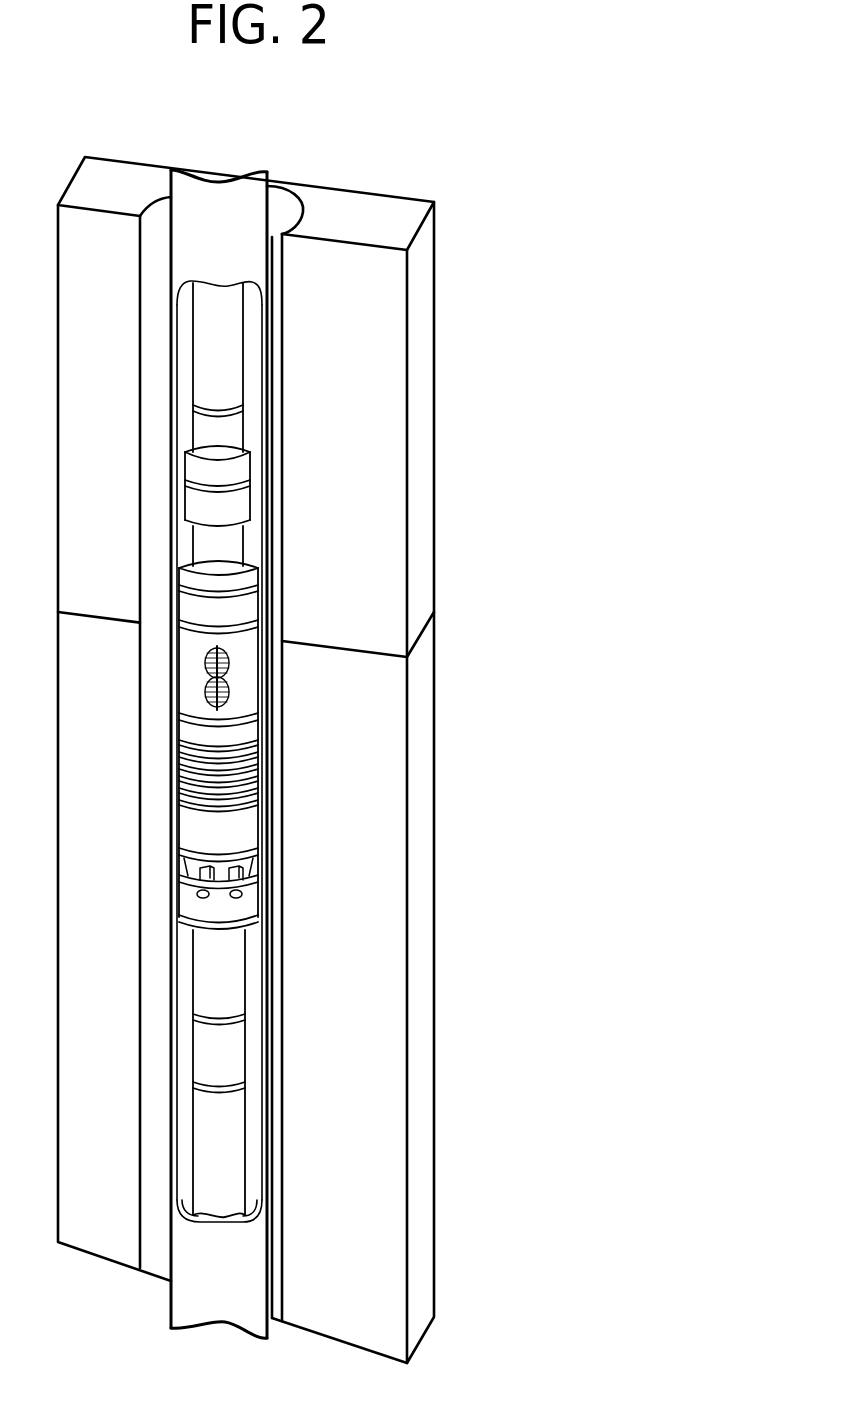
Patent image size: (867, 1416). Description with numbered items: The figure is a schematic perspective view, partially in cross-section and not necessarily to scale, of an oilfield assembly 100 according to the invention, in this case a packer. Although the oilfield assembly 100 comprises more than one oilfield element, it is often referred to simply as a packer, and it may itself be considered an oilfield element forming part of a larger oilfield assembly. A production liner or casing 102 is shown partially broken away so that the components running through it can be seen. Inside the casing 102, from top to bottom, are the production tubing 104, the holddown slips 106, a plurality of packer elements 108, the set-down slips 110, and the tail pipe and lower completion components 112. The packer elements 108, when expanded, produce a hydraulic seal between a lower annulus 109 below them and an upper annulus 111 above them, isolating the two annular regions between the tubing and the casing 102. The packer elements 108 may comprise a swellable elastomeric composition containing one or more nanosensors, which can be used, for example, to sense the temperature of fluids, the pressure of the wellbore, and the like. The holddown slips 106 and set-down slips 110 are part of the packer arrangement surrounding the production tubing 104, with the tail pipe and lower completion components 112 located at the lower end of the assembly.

The oilfield assembly 100 is at (441, 126).
The production liner or casing 102 is at (233, 262).
The production tubing 104 is at (227, 387).
The upper annulus 111 is at (243, 542).
The holddown slips 106 is at (228, 665).
The packer elements 108 is at (233, 777).
The set-down slips 110 is at (248, 870).
The lower annulus 109 is at (250, 1013).
The tail pipe and lower completion components 112 is at (232, 1073).